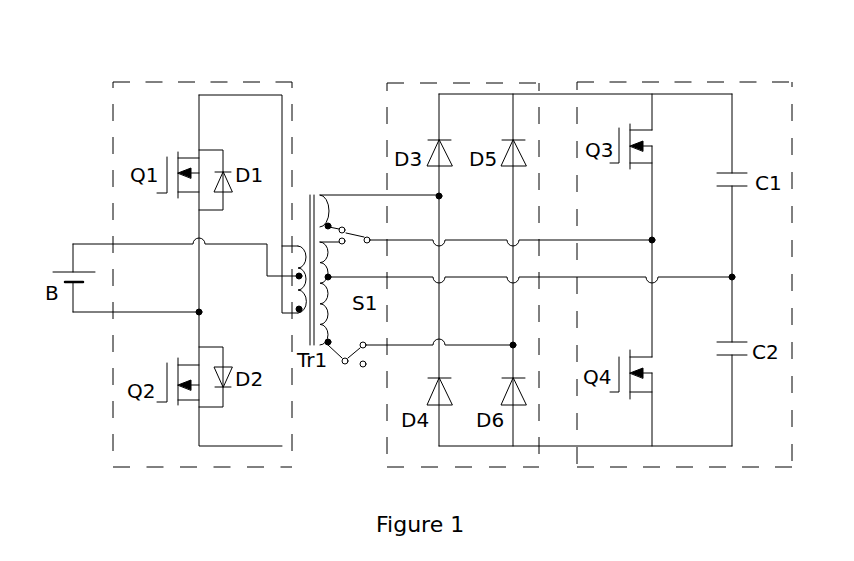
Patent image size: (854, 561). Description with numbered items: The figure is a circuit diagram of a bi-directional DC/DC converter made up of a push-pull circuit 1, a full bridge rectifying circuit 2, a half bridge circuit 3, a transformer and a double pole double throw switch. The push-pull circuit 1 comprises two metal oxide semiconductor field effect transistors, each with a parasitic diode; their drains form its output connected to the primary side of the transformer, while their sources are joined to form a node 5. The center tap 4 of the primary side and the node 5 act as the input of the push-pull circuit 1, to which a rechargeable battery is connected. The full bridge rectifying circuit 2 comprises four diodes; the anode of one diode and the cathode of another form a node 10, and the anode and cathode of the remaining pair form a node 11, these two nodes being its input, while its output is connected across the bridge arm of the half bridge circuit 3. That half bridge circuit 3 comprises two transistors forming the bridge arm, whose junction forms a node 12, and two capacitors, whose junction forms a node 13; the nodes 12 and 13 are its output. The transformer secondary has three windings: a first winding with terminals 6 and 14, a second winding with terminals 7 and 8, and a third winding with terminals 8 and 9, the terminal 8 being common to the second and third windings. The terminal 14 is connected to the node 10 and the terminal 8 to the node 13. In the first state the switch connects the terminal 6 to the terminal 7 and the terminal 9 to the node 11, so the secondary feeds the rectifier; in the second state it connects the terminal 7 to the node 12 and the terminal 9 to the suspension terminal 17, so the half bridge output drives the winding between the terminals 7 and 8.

The push-pull circuit 1 is at (203, 82).
The full bridge rectifying circuit 2 is at (464, 83).
The half bridge circuit 3 is at (684, 82).
The center tap 4 is at (276, 281).
The node 5 is at (208, 312).
The terminal 6 is at (341, 221).
The terminal 7 is at (337, 253).
The terminal 8 is at (336, 281).
The terminal 9 is at (336, 343).
The node 10 is at (454, 198).
The node 11 is at (501, 334).
The node 12 is at (666, 243).
The node 13 is at (746, 281).
The terminal 14 is at (379, 194).
The suspension terminal 17 is at (359, 369).